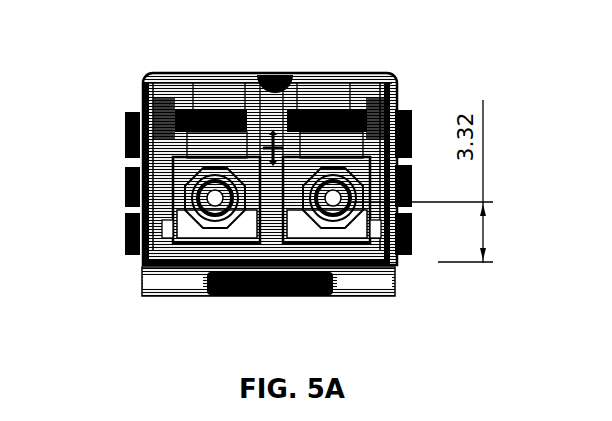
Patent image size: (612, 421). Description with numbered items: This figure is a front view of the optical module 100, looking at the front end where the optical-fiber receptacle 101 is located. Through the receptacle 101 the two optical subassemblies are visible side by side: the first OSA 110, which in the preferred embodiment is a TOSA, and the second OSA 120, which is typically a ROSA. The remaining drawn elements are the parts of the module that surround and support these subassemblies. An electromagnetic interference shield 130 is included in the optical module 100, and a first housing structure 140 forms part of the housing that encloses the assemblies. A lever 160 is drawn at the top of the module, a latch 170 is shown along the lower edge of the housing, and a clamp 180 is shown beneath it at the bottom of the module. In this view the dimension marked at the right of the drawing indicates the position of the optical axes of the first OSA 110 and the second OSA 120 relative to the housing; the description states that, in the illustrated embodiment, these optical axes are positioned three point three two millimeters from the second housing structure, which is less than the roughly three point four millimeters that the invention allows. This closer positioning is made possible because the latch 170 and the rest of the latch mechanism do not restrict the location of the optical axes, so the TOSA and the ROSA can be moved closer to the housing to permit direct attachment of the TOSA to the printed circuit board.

The optical module 100 is at (138, 53).
The optical-fiber receptacle 101 is at (405, 264).
The first OSA 110 is at (215, 205).
The second OSA 120 is at (333, 205).
The electromagnetic interference (EMI) shield 130 is at (125, 132).
The first housing structure 140 is at (125, 180).
The lever 160 is at (337, 73).
The latch 170 is at (140, 262).
The clamp 180 is at (165, 295).